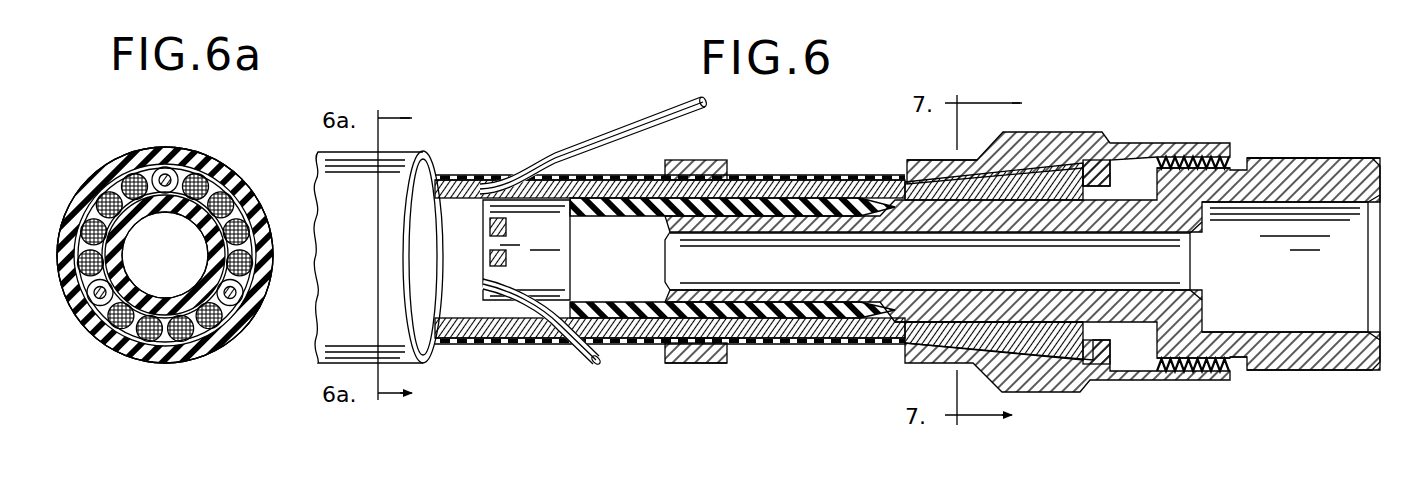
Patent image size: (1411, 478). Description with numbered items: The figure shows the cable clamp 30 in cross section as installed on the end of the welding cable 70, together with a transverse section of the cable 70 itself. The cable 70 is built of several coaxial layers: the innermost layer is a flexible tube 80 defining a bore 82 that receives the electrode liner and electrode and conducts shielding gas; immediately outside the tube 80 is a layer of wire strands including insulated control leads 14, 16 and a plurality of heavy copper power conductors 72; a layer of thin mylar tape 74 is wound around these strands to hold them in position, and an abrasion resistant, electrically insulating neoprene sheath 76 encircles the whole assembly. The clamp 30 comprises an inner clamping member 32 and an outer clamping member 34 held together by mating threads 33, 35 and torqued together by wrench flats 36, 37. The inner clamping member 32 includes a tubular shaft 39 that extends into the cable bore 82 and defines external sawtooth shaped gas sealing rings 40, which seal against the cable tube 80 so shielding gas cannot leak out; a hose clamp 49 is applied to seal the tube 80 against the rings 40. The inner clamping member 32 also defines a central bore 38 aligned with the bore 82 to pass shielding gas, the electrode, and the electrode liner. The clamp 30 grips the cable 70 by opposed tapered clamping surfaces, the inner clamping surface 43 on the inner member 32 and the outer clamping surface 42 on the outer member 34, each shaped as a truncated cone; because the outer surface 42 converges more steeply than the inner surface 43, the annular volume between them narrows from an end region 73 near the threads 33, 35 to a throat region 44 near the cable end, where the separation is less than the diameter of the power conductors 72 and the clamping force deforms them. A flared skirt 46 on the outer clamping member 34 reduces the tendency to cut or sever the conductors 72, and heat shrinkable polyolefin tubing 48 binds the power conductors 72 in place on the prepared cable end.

In FIG. 6A, the insulated control lead 14 is at (243, 320).
In FIG. 6, the insulated control lead 14 is at (583, 145).
In FIG. 6A, the insulated control lead 16 is at (168, 168).
In FIG. 6, the insulated control lead 16 is at (566, 356).
In FIG. 6, the cable clamp 30 is at (1094, 86).
In FIG. 6, the inner clamping member 32 is at (1336, 370).
In FIG. 6, the mating threads 33 is at (1183, 382).
In FIG. 6, the outer clamping member 34 is at (1025, 382).
In FIG. 6, the mating threads 35 is at (1242, 365).
In FIG. 6, the wrench flats 36 is at (1318, 158).
In FIG. 6, the wrench flats 37 is at (1070, 130).
In FIG. 6, the central bore 38 is at (1137, 268).
In FIG. 6, the tubular shaft 39 is at (790, 214).
In FIG. 6, the gas sealing rings 40 is at (747, 216).
In FIG. 6, the outer clamping surface 42 is at (1068, 162).
In FIG. 6, the inner clamping surface 43 is at (1118, 162).
In FIG. 6, the throat region 44 is at (936, 165).
In FIG. 6, the flared skirt 46 is at (900, 345).
In FIG. 6, the heat shrinkable polyolefin tubing 48 is at (647, 345).
In FIG. 6, the hose clamp 49 is at (692, 360).
In FIG. 6A, the cable 70 is at (136, 150).
In FIG. 6A, the power conductors 72 is at (222, 185).
In FIG. 6, the power conductors 72 is at (600, 185).
In FIG. 6, the end region 73 is at (1090, 382).
In FIG. 6A, the mylar tape 74 is at (216, 345).
In FIG. 6, the mylar tape 74 is at (445, 178).
In FIG. 6A, the neoprene sheath 76 is at (172, 362).
In FIG. 6, the neoprene sheath 76 is at (405, 158).
In FIG. 6A, the flexible tube 80 is at (232, 212).
In FIG. 6, the flexible tube 80 is at (540, 213).
In FIG. 6A, the bore 82 is at (250, 262).